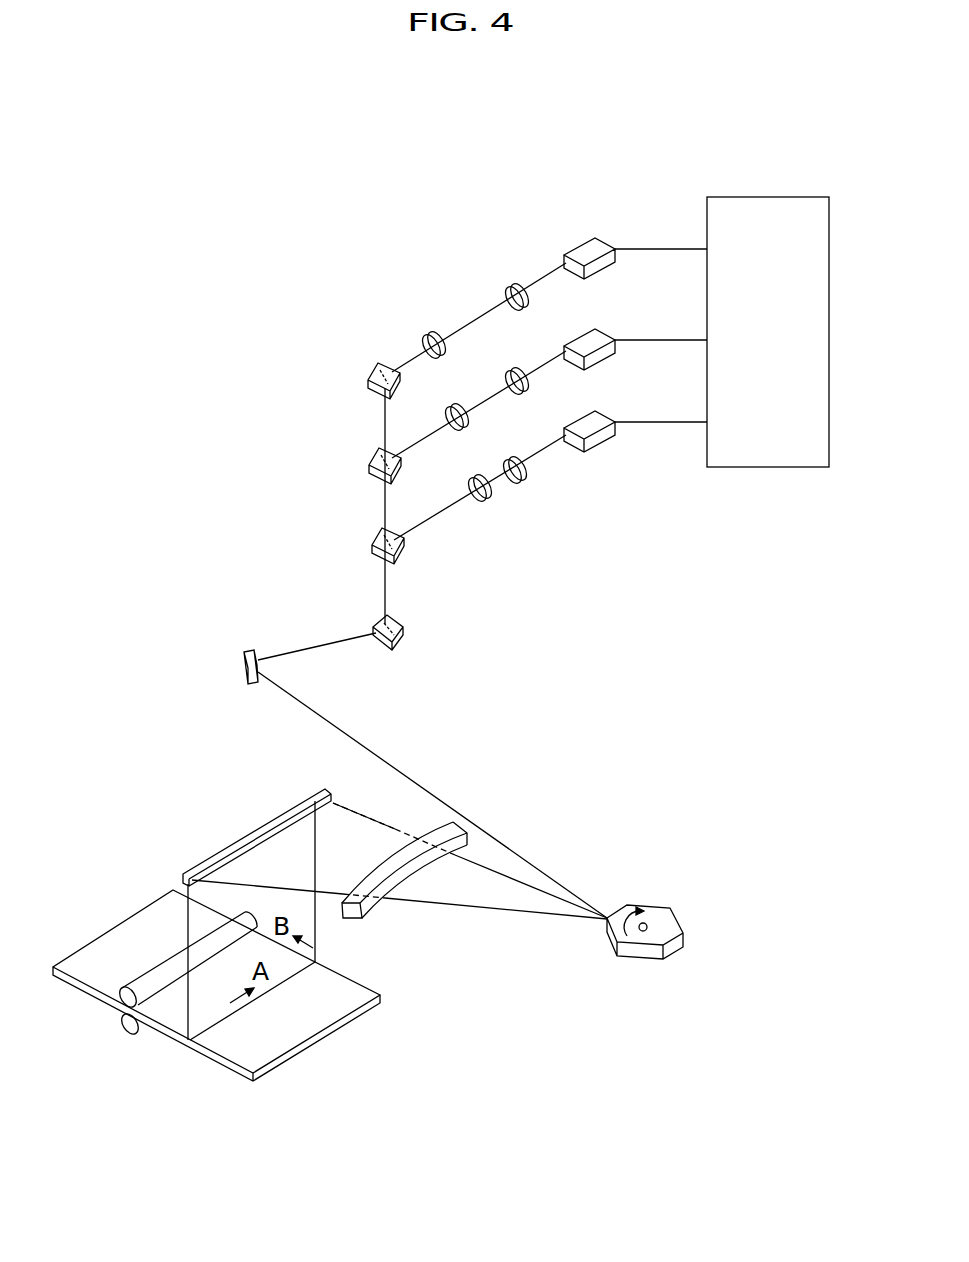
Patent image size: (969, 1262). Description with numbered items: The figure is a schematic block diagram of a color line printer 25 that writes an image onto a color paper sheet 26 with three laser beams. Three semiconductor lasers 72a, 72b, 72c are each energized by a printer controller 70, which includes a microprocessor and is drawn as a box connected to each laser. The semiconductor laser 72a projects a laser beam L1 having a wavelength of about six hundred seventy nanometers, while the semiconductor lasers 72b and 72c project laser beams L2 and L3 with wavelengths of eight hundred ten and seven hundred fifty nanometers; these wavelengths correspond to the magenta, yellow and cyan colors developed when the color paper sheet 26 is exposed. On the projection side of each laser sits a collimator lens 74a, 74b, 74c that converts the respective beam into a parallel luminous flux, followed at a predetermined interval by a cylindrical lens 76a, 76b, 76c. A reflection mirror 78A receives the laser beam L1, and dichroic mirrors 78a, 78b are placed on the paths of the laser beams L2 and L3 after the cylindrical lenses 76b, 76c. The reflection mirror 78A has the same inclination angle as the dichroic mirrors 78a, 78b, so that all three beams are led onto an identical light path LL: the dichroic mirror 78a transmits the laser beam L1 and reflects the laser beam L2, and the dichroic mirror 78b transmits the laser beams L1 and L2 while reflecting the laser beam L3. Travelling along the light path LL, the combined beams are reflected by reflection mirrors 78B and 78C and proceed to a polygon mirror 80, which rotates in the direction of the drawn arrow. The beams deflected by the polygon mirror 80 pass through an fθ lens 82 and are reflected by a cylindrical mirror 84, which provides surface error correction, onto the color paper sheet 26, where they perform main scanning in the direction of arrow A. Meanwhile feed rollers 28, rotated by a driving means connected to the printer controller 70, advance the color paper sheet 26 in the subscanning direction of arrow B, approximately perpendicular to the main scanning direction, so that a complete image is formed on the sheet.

The line printer 25 is at (306, 287).
The color paper sheet 26 is at (172, 1013).
The feed rollers 28 is at (118, 995).
The printer controller 70 is at (759, 467).
The semiconductor laser 72a is at (596, 237).
The semiconductor laser 72b is at (603, 328).
The semiconductor laser 72c is at (603, 410).
The collimator lens 74a is at (513, 286).
The collimator lens 74b is at (513, 372).
The collimator lens 74c is at (517, 484).
The cylindrical lens 76a is at (428, 334).
The cylindrical lens 76b is at (451, 408).
The cylindrical lens 76c is at (477, 501).
The reflection mirror 78A is at (374, 367).
The dichroic mirror 78a is at (372, 457).
The dichroic mirror 78b is at (377, 557).
The reflection mirror 78B is at (405, 633).
The reflection mirror 78C is at (243, 655).
The polygon mirror 80 is at (660, 916).
The fθ lens 82 is at (368, 908).
The cylindrical mirror 84 is at (248, 835).
The laser beam L1 is at (463, 324).
The laser beam L2 is at (480, 402).
The laser beam L3 is at (557, 452).
The identical light path LL is at (384, 592).